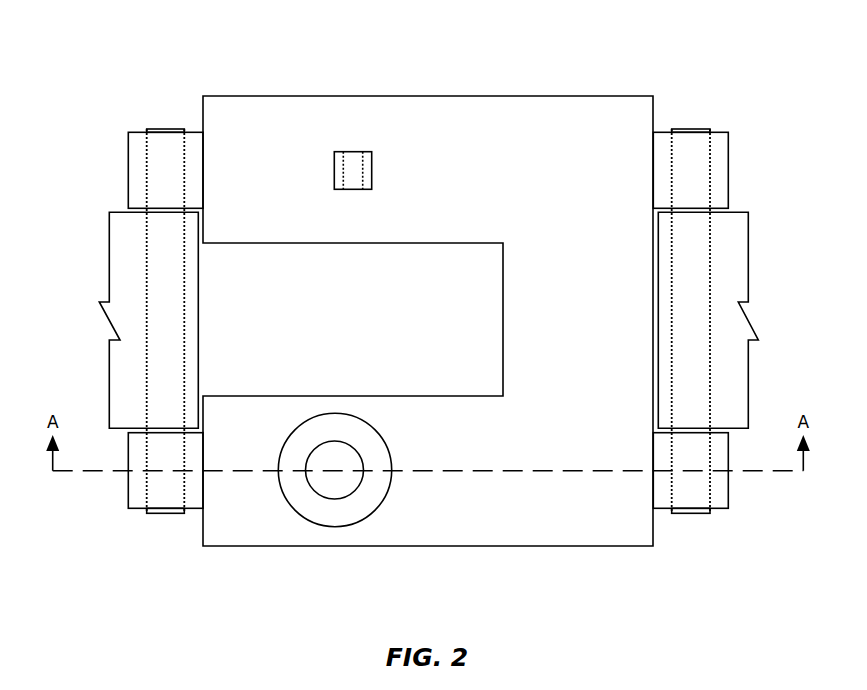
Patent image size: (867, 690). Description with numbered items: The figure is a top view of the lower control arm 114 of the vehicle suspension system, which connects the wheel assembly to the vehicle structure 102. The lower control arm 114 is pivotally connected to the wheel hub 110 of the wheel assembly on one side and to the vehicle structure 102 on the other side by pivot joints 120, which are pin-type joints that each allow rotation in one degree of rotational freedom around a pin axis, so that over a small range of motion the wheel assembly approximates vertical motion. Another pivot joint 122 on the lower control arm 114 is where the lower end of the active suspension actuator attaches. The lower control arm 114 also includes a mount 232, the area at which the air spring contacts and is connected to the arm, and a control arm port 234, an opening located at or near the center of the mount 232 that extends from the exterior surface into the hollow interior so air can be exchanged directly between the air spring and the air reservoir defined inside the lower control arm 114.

The vehicle structure 102 is at (748, 257).
The wheel hub 110 is at (108, 243).
The lower control arm 114 is at (189, 87).
The pivot joints 120 is at (157, 128).
The pivot joint 122 is at (353, 151).
The mount 232 is at (318, 527).
The control arm port 234 is at (348, 497).